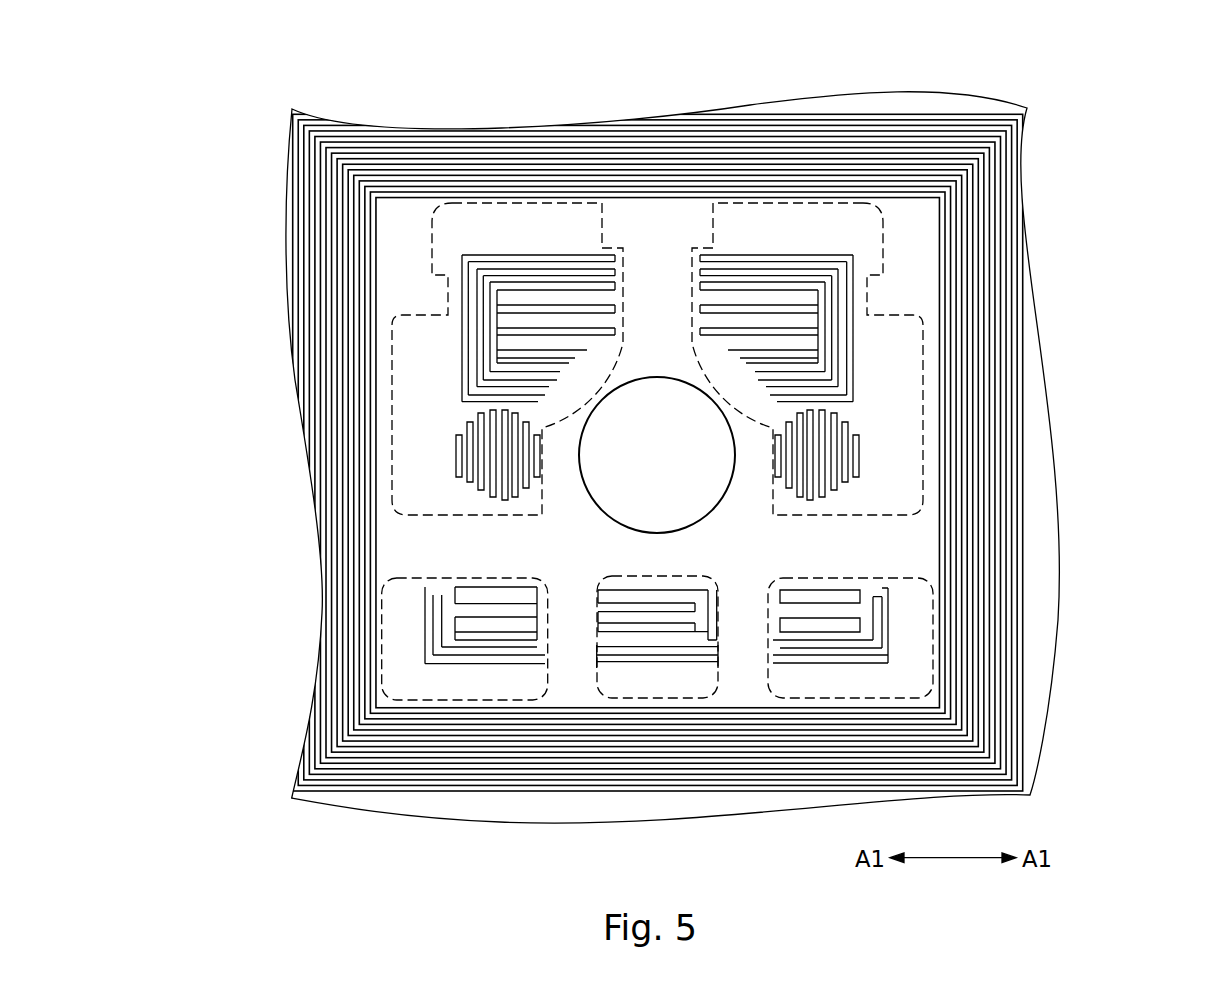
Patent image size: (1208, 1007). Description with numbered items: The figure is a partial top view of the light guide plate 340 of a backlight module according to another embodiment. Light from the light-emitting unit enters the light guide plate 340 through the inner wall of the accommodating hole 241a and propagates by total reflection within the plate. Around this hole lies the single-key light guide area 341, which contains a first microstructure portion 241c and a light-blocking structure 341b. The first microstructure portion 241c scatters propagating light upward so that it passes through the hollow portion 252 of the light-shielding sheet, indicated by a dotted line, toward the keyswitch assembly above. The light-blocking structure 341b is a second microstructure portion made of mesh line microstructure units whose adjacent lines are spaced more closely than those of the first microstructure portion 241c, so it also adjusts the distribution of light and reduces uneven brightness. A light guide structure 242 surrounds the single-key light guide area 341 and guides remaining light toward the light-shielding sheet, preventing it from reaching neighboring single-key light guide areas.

The light guide plate 340 is at (1190, 56).
The light guide structure 242 is at (292, 264).
The first microstructure portion 241c is at (540, 255).
The single-key light guide area 341 is at (913, 195).
The hollow portion 252 is at (375, 462).
The light-blocking structure 341b is at (465, 482).
The accommodating hole 241a is at (599, 513).